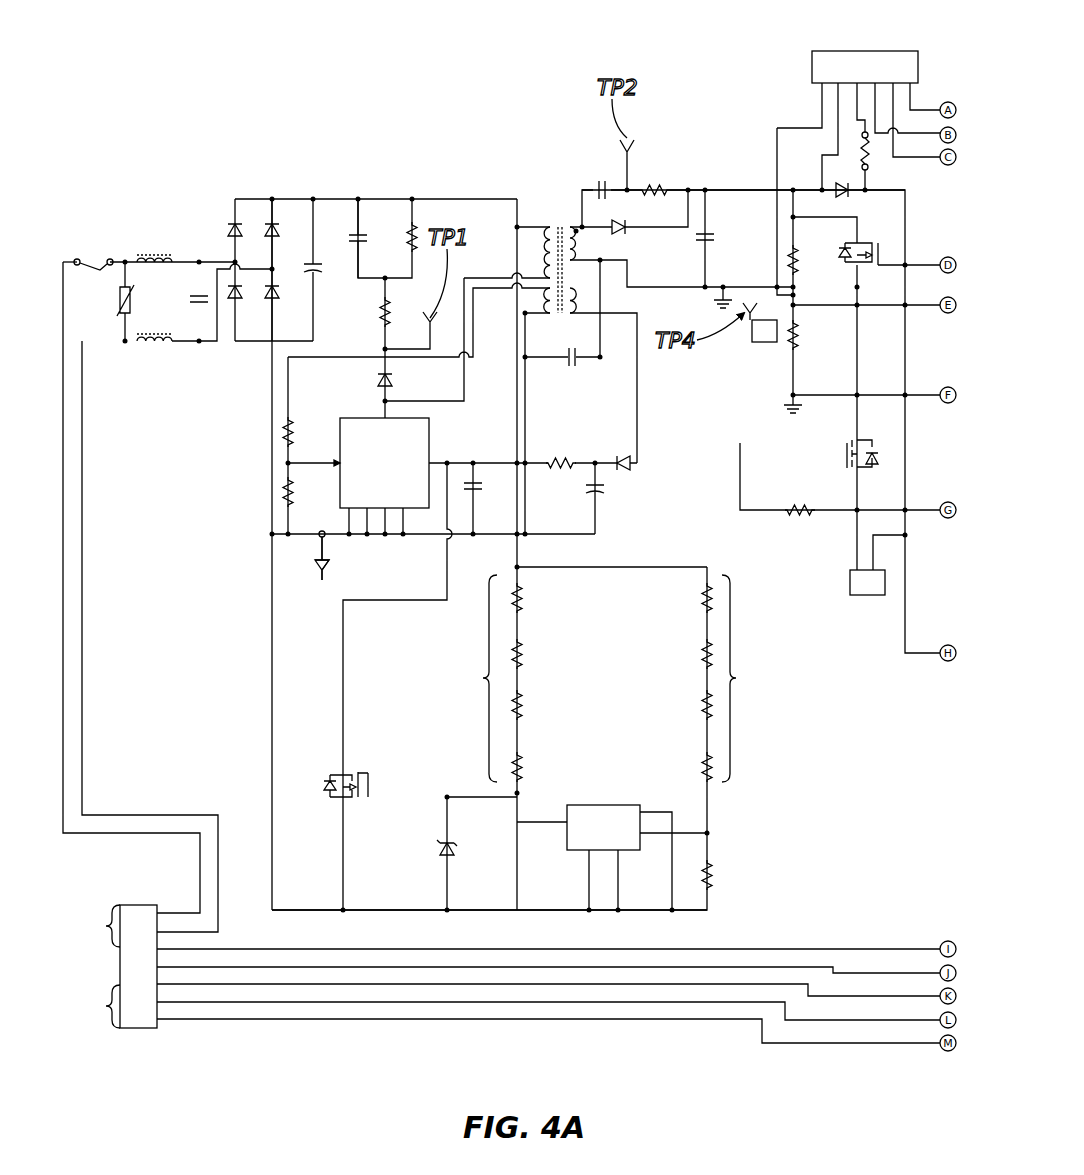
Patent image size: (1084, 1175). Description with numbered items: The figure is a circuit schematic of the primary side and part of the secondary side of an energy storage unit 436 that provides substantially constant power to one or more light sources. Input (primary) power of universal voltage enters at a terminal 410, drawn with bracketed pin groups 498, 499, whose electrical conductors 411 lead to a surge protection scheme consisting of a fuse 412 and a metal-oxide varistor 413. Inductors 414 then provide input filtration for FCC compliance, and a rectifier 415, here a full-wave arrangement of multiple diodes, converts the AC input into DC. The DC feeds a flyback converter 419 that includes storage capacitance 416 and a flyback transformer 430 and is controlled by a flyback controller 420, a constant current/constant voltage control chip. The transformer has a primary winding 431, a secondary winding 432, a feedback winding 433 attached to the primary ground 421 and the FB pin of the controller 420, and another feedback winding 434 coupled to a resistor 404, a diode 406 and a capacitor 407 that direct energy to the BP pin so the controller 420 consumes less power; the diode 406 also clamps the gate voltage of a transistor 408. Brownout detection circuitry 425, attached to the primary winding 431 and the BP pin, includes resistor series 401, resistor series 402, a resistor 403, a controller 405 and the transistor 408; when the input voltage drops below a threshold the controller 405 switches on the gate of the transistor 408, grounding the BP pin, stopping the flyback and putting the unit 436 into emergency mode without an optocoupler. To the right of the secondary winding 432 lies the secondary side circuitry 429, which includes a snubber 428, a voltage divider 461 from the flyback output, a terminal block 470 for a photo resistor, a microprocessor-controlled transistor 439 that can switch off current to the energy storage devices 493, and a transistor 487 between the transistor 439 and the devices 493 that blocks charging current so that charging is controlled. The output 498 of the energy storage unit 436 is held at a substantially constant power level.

The resistor series 401 is at (746, 678).
The resistor series 402 is at (478, 678).
The resistor 403 is at (712, 860).
The resistor 404 is at (562, 458).
The controller 405 is at (608, 800).
The diode 406 is at (637, 471).
The capacitor 407 is at (612, 488).
The transistor 408 is at (350, 772).
The terminal 410 is at (142, 1034).
The electrical conductors 411 is at (63, 542).
The fuse 412 is at (88, 258).
The metal-oxide varistor 413 is at (118, 290).
The inductors 414 is at (152, 252).
The rectifier 415 is at (250, 196).
The storage capacitance 416 is at (310, 265).
The flyback converter 419 is at (423, 163).
The flyback controller 420 is at (353, 416).
The primary ground 421 is at (322, 582).
The brownout detection circuitry 425 is at (337, 918).
The snubber 428 is at (657, 164).
The secondary side circuitry 429 is at (583, 138).
The flyback transformer 430 is at (550, 198).
The primary winding 431 is at (545, 233).
The secondary winding 432 is at (578, 230).
The feedback winding 433 is at (545, 297).
The feedback winding 434 is at (572, 297).
The energy storage unit 436 is at (133, 45).
The microprocessor-controlled transistor 439 is at (880, 243).
The voltage divider 461 is at (750, 347).
The terminal block 470 is at (830, 46).
The transistor 487 is at (874, 450).
The energy storage devices 493 is at (850, 568).
The output 498 is at (92, 926).
The connector pins 499 is at (92, 1006).